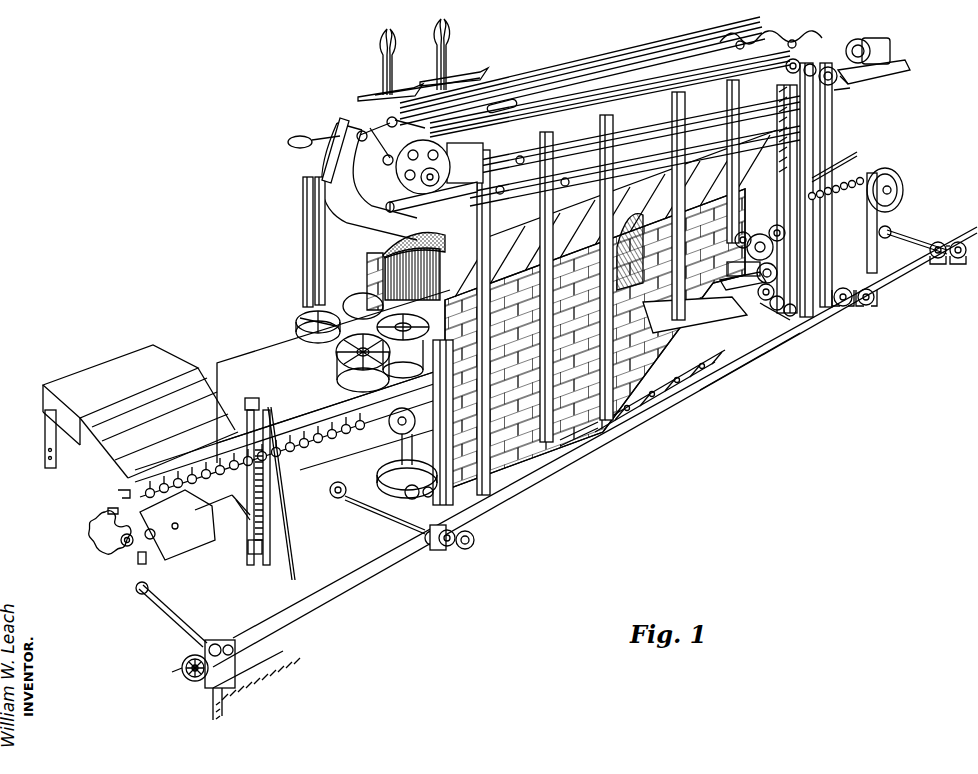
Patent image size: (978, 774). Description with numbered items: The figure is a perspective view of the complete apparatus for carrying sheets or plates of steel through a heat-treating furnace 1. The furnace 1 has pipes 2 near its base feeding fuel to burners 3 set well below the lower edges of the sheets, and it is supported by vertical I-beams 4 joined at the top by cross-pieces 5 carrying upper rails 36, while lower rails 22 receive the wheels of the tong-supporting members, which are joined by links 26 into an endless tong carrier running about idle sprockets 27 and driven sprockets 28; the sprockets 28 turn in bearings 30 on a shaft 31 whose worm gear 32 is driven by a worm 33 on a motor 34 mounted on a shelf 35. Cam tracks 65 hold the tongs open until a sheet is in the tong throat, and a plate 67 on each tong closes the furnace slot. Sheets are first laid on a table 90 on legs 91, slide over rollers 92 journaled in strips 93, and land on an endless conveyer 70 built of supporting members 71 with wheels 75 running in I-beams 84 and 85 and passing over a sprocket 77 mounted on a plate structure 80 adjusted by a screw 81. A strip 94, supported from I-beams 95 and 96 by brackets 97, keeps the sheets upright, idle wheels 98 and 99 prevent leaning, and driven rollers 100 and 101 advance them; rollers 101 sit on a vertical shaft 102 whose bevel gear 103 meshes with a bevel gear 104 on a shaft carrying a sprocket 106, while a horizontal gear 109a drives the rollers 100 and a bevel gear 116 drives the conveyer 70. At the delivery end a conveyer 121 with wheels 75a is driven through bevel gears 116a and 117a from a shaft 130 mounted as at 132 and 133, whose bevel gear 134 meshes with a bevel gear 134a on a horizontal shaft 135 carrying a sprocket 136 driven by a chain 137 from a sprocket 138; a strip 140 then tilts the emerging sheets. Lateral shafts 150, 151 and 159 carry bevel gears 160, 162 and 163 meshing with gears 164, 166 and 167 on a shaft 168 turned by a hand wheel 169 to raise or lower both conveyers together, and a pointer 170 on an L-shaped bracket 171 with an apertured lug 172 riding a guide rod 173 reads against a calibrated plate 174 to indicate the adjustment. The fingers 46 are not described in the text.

The furnace 1 is at (516, 440).
The pipes 2 is at (586, 435).
The burners 3 is at (636, 350).
The I-beams 4 is at (548, 432).
The top cross-pieces 5 is at (637, 66).
The rails 22 is at (580, 185).
The links 26 is at (493, 105).
The driving wheels or sprockets 27 is at (452, 162).
The sprocket members 28 is at (740, 40).
The bearings 30 is at (826, 67).
The shaft 31 is at (832, 93).
The worm gear 32 is at (846, 80).
The worm 33 is at (860, 75).
The motor 34 is at (876, 47).
The shelf 35 is at (846, 88).
The rails 36 is at (598, 78).
The fingers 46 is at (384, 52).
The cam tracks 65 is at (340, 216).
The plate 67 is at (378, 92).
The endless conveyer 70 is at (285, 420).
The supporting members 71 is at (320, 412).
The wheels or rollers 75 is at (238, 440).
The wheels 75a is at (876, 180).
The sprocket 77 is at (100, 550).
The plate structure 80 is at (140, 560).
The screw 81 is at (196, 514).
The I-beam 84 is at (120, 492).
The I-beam 85 is at (108, 512).
The table 90 is at (82, 383).
The legs 91 is at (45, 425).
The rollers 92 is at (98, 430).
The metal strips 93 is at (120, 455).
The horizontal metal strip 94 is at (268, 395).
The vertical I-beam 95 is at (272, 510).
The vertical I-beam 96 is at (470, 480).
The bracket 97 is at (247, 398).
The idly rotatable wheels 98 is at (298, 315).
The idly rotatable wheels 99 is at (360, 385).
The positively-driven rollers 100 is at (355, 300).
The positively-driven rollers 101 is at (392, 324).
The vertical shaft 102 is at (378, 465).
The beveled gear 103 is at (395, 500).
The beveled gear 104 is at (420, 522).
The sprocket 106 is at (458, 511).
The horizontally disposed gear 109a is at (340, 498).
The beveled gear 116 is at (390, 424).
The bevel gear 116a is at (752, 248).
The bevel gear 117a is at (760, 236).
The conveyor 121 is at (903, 177).
The shaft 130 is at (768, 258).
The bracket 132 is at (745, 278).
The base 133 is at (724, 282).
The beveled gear 134 is at (760, 298).
The beveled gear 134a is at (774, 308).
The horizontal shaft 135 is at (788, 314).
The sprocket 136 is at (794, 314).
The sprocket chain 137 is at (790, 274).
The sprocket 138 is at (796, 59).
The strip of metal 140 is at (842, 160).
The horizontal shaft 150 is at (176, 618).
The horizontal shaft 151 is at (408, 492).
The horizontal shaft 159 is at (913, 240).
The beveled gear 160 is at (205, 645).
The beveled gear 162 is at (850, 296).
The beveled gear 163 is at (945, 242).
The gear 164 is at (240, 668).
The gear 166 is at (866, 305).
The gear 167 is at (944, 258).
The shaft 168 is at (318, 615).
The hand wheel 169 is at (182, 660).
The pointer 170 is at (250, 548).
The L-shaped bracket 171 is at (228, 498).
The apertured lug 172 is at (248, 520).
The guide rod 173 is at (270, 535).
The calibrated plate 174 is at (263, 520).